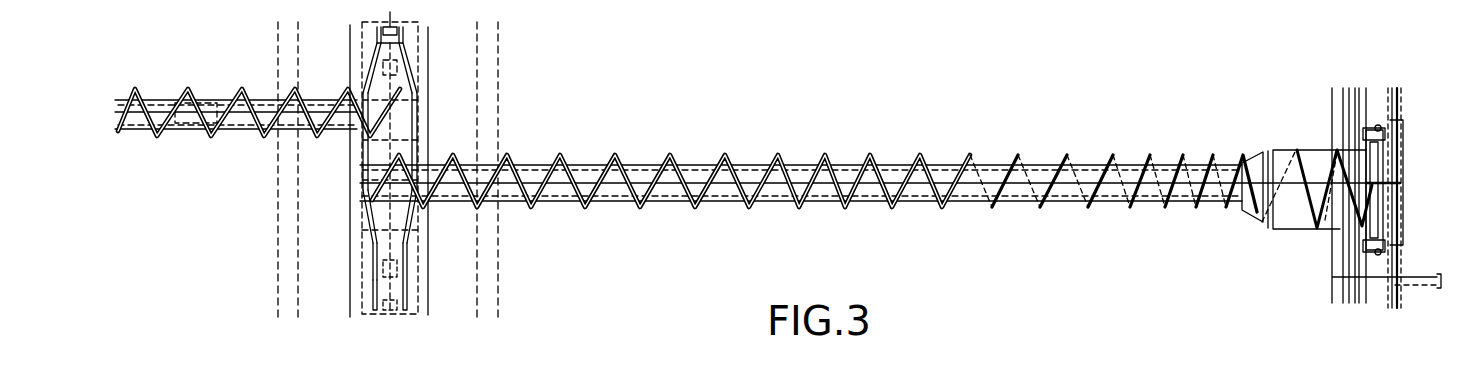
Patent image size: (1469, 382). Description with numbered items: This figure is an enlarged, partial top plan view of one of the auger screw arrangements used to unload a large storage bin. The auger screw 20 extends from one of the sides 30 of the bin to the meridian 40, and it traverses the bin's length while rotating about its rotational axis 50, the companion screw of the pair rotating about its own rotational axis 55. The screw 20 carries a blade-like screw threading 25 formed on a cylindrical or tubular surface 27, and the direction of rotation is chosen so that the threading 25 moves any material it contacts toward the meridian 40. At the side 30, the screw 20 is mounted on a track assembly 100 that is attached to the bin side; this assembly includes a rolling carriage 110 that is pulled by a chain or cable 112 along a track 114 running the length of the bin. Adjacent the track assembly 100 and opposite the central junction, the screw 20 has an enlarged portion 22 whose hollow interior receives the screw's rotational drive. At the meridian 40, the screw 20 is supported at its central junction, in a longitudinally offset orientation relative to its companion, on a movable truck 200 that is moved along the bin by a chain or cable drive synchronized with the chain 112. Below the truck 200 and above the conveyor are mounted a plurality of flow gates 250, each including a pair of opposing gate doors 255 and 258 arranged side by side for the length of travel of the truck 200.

The auger screw 20 is at (873, 135).
The enlarged portion 22 is at (1282, 150).
The screw threading 25 is at (880, 163).
The cylindrical or tubular surface 27 is at (950, 165).
The sides 30 is at (1420, 98).
The meridian 40 is at (388, 316).
The rotational axis 50 is at (192, 103).
The rotational axis 55 is at (974, 167).
The track assembly 100 is at (1422, 178).
The rolling carriage 110 is at (1380, 126).
The chain or cable 112 is at (1385, 110).
The track 114 is at (1403, 117).
The movable truck 200 is at (422, 94).
The flow gate 250 is at (373, 299).
The gate door 255 is at (405, 274).
The gate door 258 is at (370, 278).